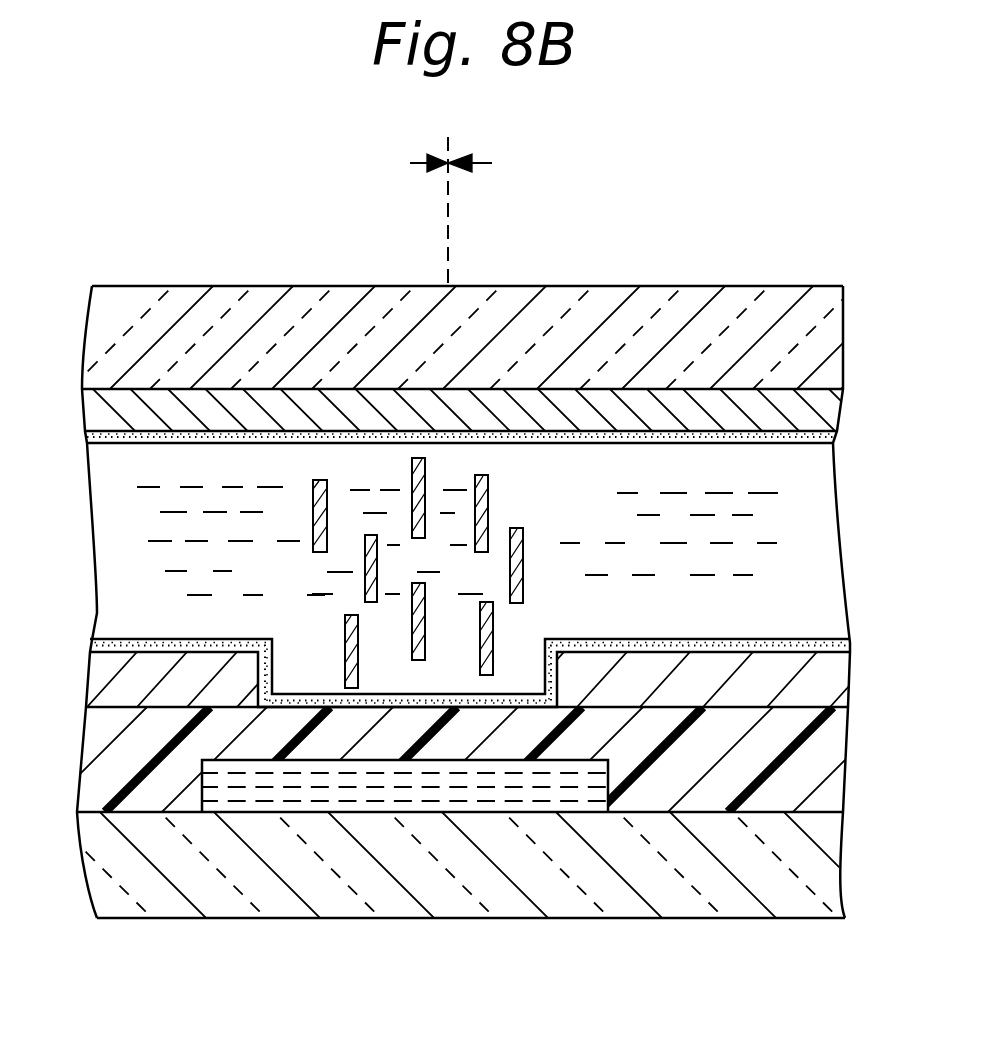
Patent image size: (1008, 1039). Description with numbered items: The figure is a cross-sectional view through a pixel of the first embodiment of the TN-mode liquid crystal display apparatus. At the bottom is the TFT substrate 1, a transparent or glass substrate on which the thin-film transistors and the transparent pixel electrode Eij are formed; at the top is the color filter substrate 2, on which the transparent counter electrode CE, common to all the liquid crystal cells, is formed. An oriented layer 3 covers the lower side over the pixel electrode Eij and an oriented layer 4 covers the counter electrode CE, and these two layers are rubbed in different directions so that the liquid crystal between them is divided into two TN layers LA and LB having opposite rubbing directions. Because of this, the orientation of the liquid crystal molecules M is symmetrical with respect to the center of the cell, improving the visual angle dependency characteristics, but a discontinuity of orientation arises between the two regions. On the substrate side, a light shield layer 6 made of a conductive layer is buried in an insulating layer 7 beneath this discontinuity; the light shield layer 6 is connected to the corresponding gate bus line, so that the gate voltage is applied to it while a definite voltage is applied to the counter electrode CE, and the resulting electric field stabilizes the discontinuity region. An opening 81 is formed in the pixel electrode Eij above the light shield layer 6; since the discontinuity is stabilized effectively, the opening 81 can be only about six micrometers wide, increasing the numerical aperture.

The TFT substrate 1 is at (828, 882).
The color filter substrate 2 is at (823, 362).
The oriented layer 3 is at (850, 650).
The oriented layer 4 is at (833, 444).
The light shield layer 6 is at (278, 795).
The insulating layer 7 is at (817, 786).
The opening 81 is at (305, 650).
The liquid crystal molecules M is at (490, 506).
The pixel electrode Eij is at (878, 686).
The counter electrode CE is at (578, 410).
The TN layer LA is at (513, 286).
The TN layer LB is at (448, 242).